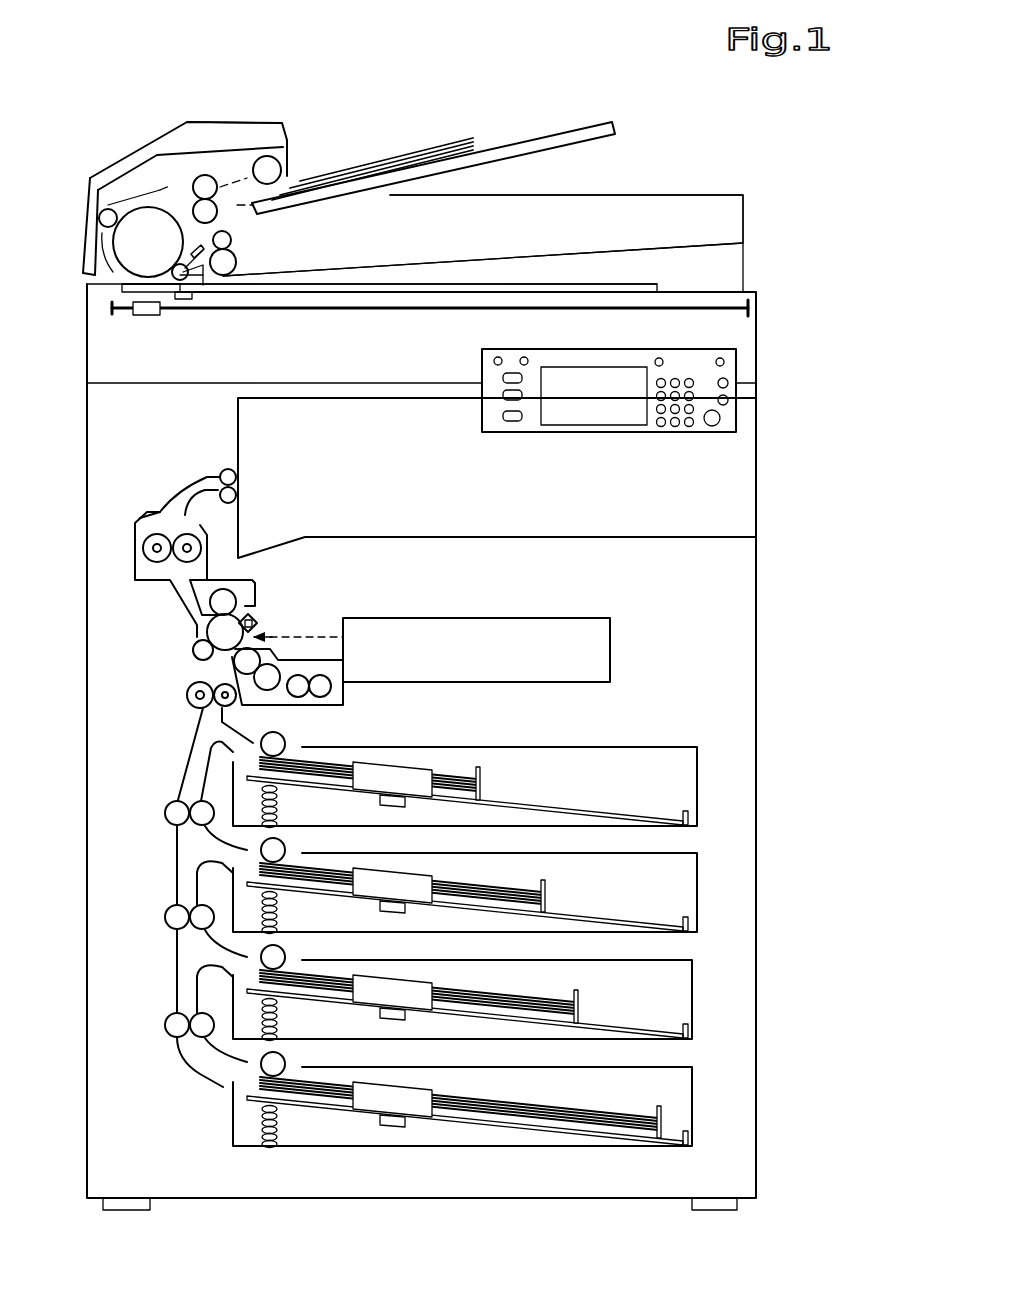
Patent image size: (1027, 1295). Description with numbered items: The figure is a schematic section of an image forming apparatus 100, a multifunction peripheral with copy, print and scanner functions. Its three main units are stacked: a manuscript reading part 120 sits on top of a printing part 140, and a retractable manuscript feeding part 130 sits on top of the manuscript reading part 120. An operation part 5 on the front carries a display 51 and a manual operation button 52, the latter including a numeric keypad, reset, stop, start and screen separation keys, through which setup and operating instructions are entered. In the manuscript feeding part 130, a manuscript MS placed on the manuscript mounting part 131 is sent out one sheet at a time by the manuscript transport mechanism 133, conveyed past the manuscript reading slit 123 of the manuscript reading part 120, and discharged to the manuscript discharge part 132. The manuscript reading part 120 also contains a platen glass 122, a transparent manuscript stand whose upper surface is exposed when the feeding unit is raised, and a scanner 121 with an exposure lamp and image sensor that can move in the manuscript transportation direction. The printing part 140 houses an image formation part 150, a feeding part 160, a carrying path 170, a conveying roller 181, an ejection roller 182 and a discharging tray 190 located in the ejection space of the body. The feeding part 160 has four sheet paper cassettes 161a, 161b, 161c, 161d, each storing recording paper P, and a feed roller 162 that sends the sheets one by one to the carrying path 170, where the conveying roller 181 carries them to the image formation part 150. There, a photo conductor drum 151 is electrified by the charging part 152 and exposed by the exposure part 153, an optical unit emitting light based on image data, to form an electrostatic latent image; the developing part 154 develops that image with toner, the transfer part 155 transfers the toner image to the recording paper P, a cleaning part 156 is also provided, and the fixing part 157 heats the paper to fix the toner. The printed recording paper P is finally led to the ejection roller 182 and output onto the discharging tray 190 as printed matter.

The image forming apparatus 100 is at (90, 103).
The manuscript feeding part 130 is at (310, 128).
The manuscript transport mechanism 133 is at (218, 118).
The manuscript MS is at (428, 138).
The manuscript mounting part 131 is at (577, 125).
The manuscript discharge part 132 is at (497, 258).
The platen glass 122 is at (582, 287).
The manuscript reading slit 123 is at (160, 288).
The scanner 121 is at (150, 320).
The manuscript reading part 120 is at (760, 322).
The operation part 5 is at (738, 372).
The display 51 is at (588, 418).
The manual operation button 52 is at (675, 432).
The discharging tray in the body 190 is at (460, 535).
The ejection roller 182 is at (233, 473).
The printing part 140 is at (762, 608).
The image formation part 150 is at (338, 598).
The fixing part 157 is at (208, 540).
The cleaning part 156 is at (247, 588).
The photo conductor drum 151 is at (213, 628).
The transfer part 155 is at (192, 650).
The charging part 152 is at (254, 618).
The exposure part 153 is at (570, 658).
The developing part 154 is at (333, 692).
The carrying path 170 is at (176, 737).
The conveying roller 181 is at (187, 692).
The feeding part 160 is at (728, 765).
The sheet paper cassette 161a is at (697, 790).
The sheet paper cassette 161b is at (697, 896).
The sheet paper cassette 161c is at (692, 1004).
The sheet paper cassette 161d is at (692, 1110).
The feed roller 162 is at (285, 745).
The recording paper P is at (583, 1107).